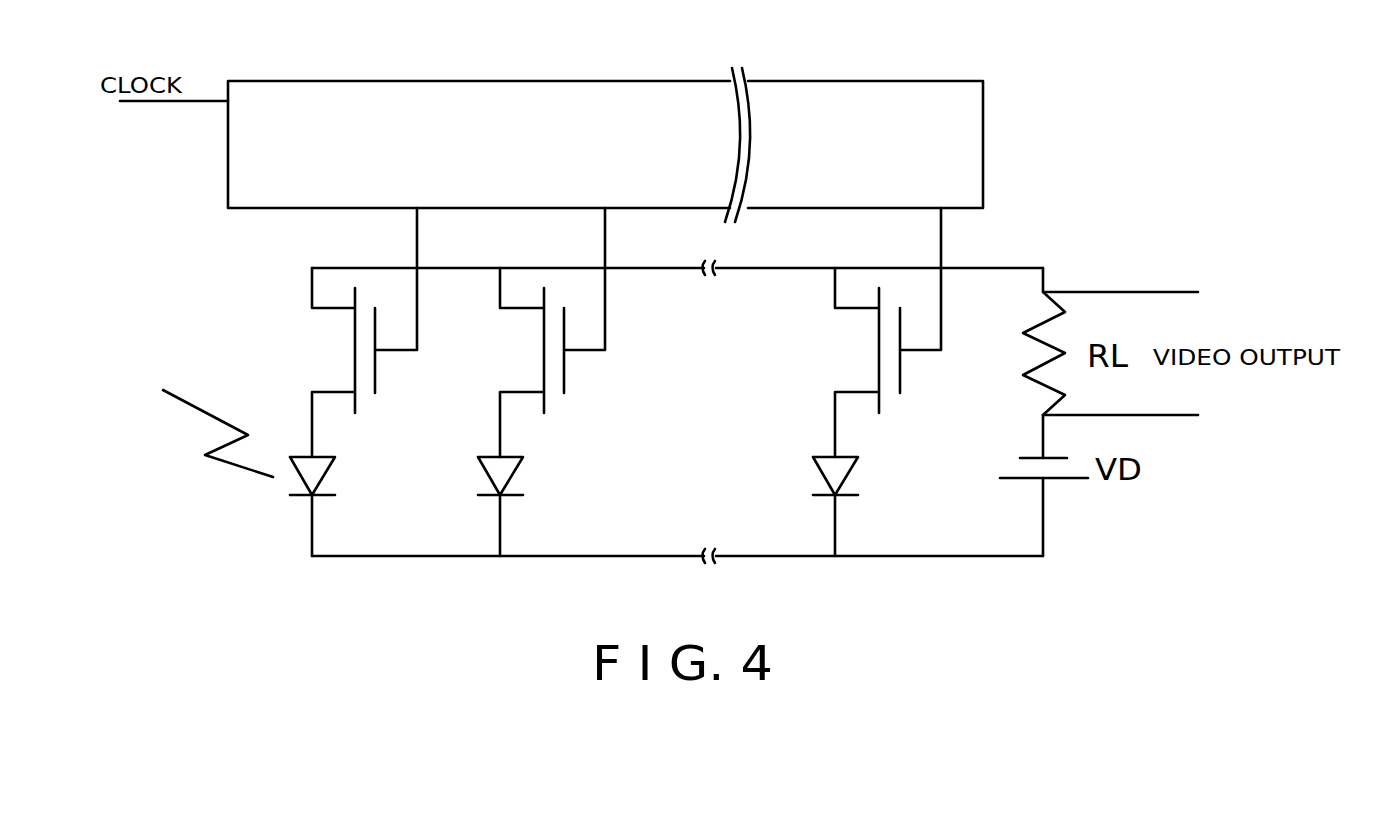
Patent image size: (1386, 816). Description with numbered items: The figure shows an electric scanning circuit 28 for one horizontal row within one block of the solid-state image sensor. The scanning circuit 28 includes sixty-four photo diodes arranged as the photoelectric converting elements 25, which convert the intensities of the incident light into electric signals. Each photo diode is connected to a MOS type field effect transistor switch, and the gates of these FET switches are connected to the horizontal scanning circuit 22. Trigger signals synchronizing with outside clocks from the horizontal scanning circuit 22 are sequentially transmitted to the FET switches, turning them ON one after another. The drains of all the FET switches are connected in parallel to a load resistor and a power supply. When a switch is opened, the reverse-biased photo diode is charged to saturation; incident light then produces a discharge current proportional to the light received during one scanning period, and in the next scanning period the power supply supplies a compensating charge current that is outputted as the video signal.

The horizontal scanning circuit 22 is at (780, 82).
The photoelectric converting elements 25 is at (298, 472).
The electric scanning circuit 28 is at (618, 349).